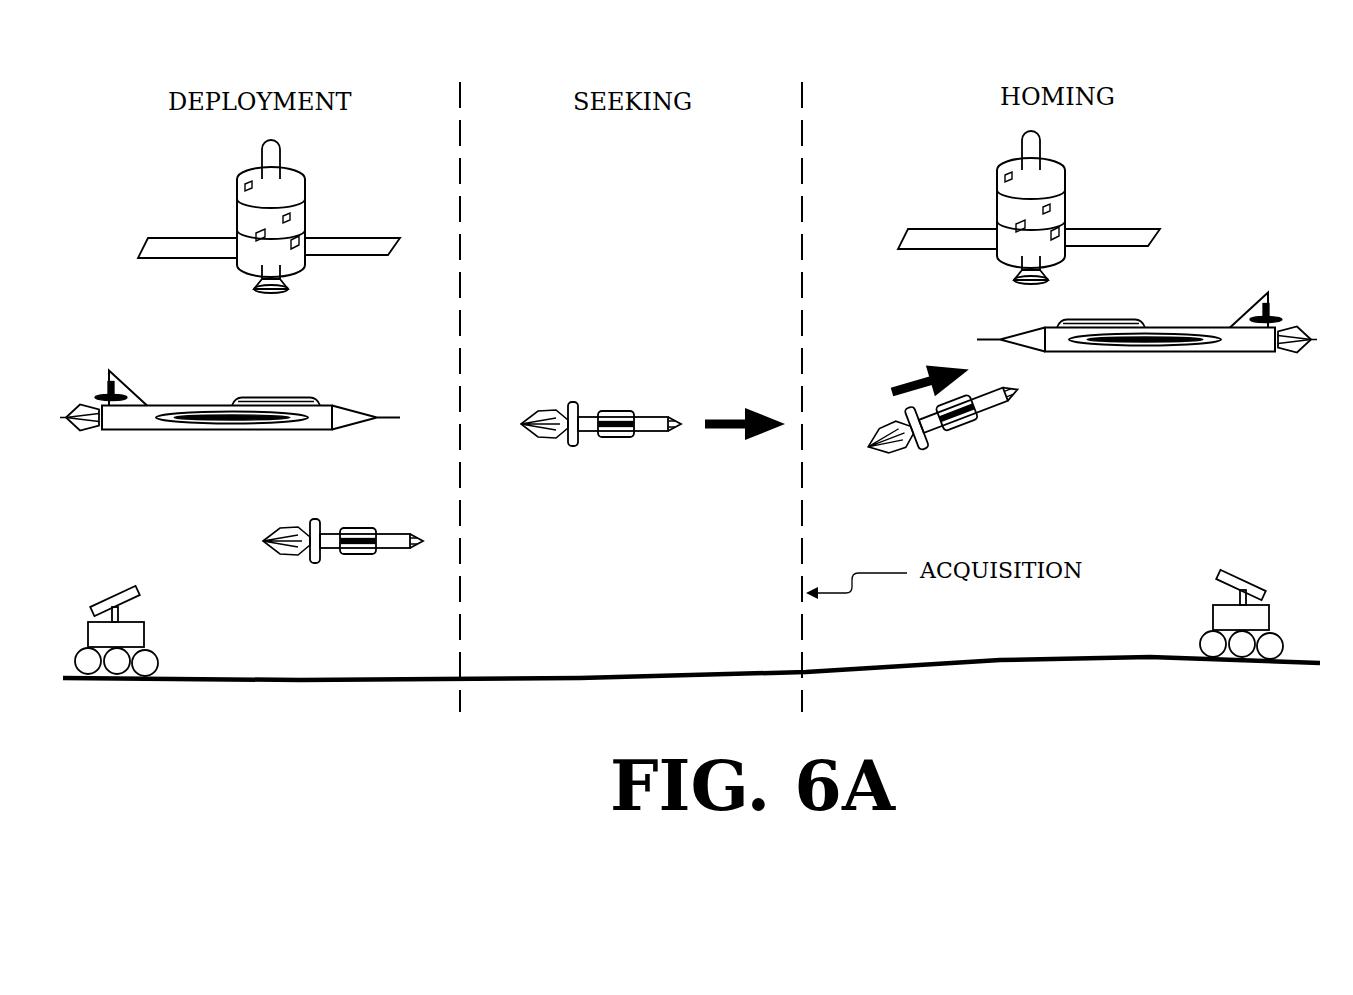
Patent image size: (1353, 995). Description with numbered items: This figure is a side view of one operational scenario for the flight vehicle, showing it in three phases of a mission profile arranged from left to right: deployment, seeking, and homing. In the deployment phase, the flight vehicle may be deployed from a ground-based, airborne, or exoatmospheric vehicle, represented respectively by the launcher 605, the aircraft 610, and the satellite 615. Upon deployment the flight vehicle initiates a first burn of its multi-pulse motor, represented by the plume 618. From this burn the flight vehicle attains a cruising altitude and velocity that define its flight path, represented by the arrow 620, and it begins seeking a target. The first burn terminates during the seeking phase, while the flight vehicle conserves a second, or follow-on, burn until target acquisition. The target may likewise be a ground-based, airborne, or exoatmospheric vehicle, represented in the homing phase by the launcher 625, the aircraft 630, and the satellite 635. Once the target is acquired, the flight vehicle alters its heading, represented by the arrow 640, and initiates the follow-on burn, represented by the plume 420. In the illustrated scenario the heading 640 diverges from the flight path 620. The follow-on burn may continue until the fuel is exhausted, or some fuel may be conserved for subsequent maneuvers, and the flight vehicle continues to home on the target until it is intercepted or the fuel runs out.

The plume 420 is at (882, 433).
The launcher 605 is at (145, 622).
The aircraft 610 is at (345, 402).
The satellite 615 is at (303, 277).
The plume 618 is at (282, 538).
The arrow 620 is at (727, 428).
The launcher 625 is at (1240, 575).
The aircraft 630 is at (1193, 352).
The satellite 635 is at (1000, 278).
The arrow 640 is at (912, 380).